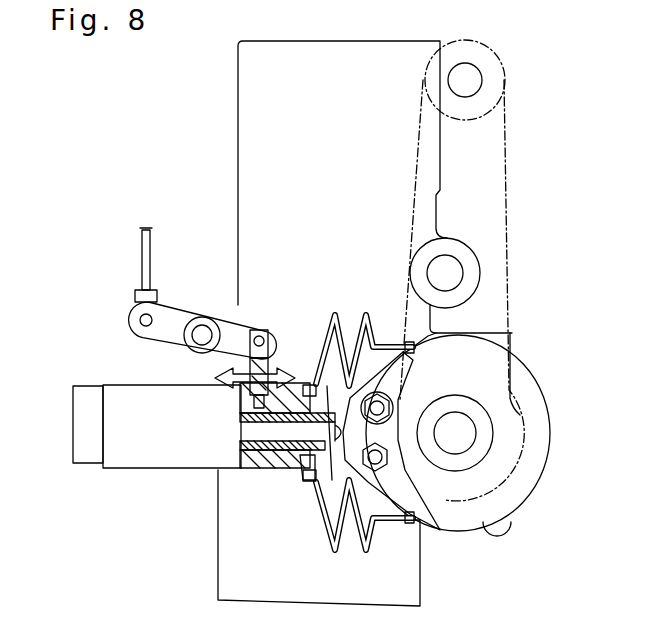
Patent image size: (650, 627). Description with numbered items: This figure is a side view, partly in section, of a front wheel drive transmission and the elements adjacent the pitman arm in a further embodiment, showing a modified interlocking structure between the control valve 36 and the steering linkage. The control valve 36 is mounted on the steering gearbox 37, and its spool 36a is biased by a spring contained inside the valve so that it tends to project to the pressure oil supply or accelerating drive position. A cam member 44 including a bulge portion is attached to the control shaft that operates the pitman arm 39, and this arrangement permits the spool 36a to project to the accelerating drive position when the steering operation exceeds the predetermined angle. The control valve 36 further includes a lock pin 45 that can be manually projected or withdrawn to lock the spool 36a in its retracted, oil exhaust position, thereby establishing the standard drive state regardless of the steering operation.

The control valve 36 is at (167, 468).
The spool 36a is at (287, 452).
The steering gearbox 37 is at (240, 113).
The pitman arm 39 is at (508, 240).
The cam member 44 is at (415, 520).
The lock pin 45 is at (275, 345).